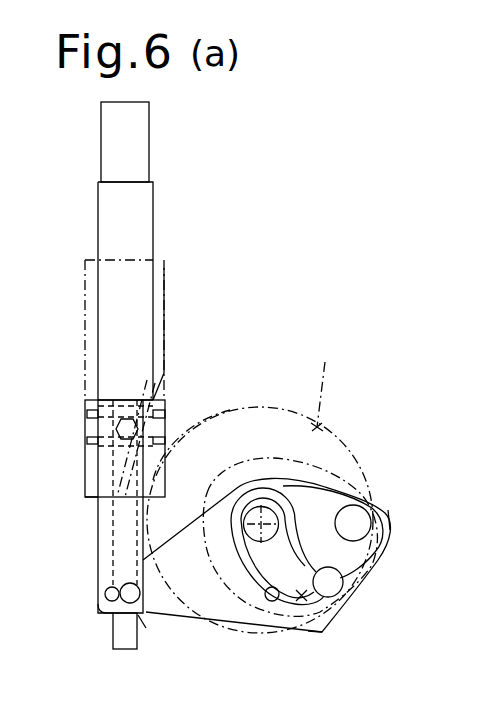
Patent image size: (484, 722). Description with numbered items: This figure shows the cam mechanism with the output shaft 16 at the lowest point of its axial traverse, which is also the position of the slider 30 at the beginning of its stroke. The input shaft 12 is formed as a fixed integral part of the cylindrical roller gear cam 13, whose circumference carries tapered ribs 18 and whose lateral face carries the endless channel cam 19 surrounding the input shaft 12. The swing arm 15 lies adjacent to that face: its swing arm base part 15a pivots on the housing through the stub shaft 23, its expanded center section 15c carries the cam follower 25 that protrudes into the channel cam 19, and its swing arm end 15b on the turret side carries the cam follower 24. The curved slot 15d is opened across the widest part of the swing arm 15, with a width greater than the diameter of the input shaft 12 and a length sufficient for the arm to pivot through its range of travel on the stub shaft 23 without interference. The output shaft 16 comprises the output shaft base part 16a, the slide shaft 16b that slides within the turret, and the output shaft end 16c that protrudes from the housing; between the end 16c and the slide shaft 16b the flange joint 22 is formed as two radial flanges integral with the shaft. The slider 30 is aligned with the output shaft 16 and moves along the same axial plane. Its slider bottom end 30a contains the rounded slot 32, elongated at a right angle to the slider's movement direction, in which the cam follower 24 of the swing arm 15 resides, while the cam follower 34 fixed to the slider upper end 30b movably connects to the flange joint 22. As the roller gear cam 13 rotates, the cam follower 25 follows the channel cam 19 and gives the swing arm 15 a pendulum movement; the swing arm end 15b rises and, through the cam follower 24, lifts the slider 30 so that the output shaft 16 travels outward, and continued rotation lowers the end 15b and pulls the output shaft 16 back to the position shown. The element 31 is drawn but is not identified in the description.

The input shaft 12 is at (268, 510).
The roller gear cam 13 is at (326, 385).
The swing arm 15 is at (222, 620).
The swing arm base part 15a is at (391, 521).
The swing arm end 15b is at (107, 622).
The expanded center section 15c is at (290, 630).
The curved slot 15d is at (277, 601).
The output shaft 16 is at (153, 210).
The output shaft base part 16a is at (127, 651).
The slide shaft 16b is at (110, 517).
The output shaft end 16c is at (139, 133).
The tapered ribs 18 is at (242, 408).
The endless channel cam 19 is at (316, 480).
The flange joint 22 is at (165, 418).
The stub shaft 23 is at (377, 502).
The cam follower 24 is at (108, 597).
The cam follower 25 is at (344, 578).
The slider 30 is at (97, 464).
The slider bottom end 30a is at (97, 607).
The slider upper end 30b is at (110, 400).
The guide housing 31 is at (165, 278).
The rounded slot 32 is at (105, 590).
The cam follower 34 is at (170, 363).